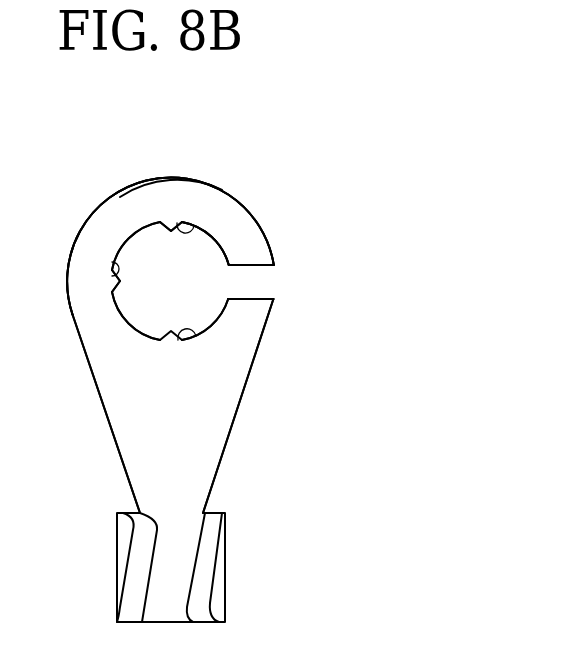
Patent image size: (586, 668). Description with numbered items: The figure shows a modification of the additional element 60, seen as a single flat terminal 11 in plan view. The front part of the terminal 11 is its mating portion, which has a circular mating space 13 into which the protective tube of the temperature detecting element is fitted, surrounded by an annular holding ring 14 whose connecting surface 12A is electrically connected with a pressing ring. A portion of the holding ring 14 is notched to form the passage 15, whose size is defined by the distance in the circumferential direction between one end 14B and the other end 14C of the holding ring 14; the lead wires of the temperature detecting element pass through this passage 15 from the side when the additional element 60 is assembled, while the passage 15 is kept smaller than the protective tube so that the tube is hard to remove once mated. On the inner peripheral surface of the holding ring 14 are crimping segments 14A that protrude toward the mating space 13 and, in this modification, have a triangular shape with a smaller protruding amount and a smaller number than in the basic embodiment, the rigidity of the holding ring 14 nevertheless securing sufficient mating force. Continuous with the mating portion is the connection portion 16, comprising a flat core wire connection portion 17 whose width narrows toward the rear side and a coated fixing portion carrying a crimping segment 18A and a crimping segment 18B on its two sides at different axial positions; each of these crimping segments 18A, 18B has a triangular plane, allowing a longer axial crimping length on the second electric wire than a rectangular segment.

The additional element 60 is at (305, 137).
The terminal 11 is at (268, 243).
The connecting surface 12A is at (155, 197).
The mating space 13 is at (183, 292).
The holding ring 14 is at (78, 232).
The crimping segment 14A is at (192, 220).
The one end of the holding ring 14B is at (112, 266).
The other end of the holding ring 14C is at (251, 282).
The passage 15 is at (250, 298).
The connection portion 16 is at (112, 437).
The core wire connection portion 17 is at (123, 393).
The crimping segment 18A is at (213, 580).
The crimping segment 18B is at (130, 553).